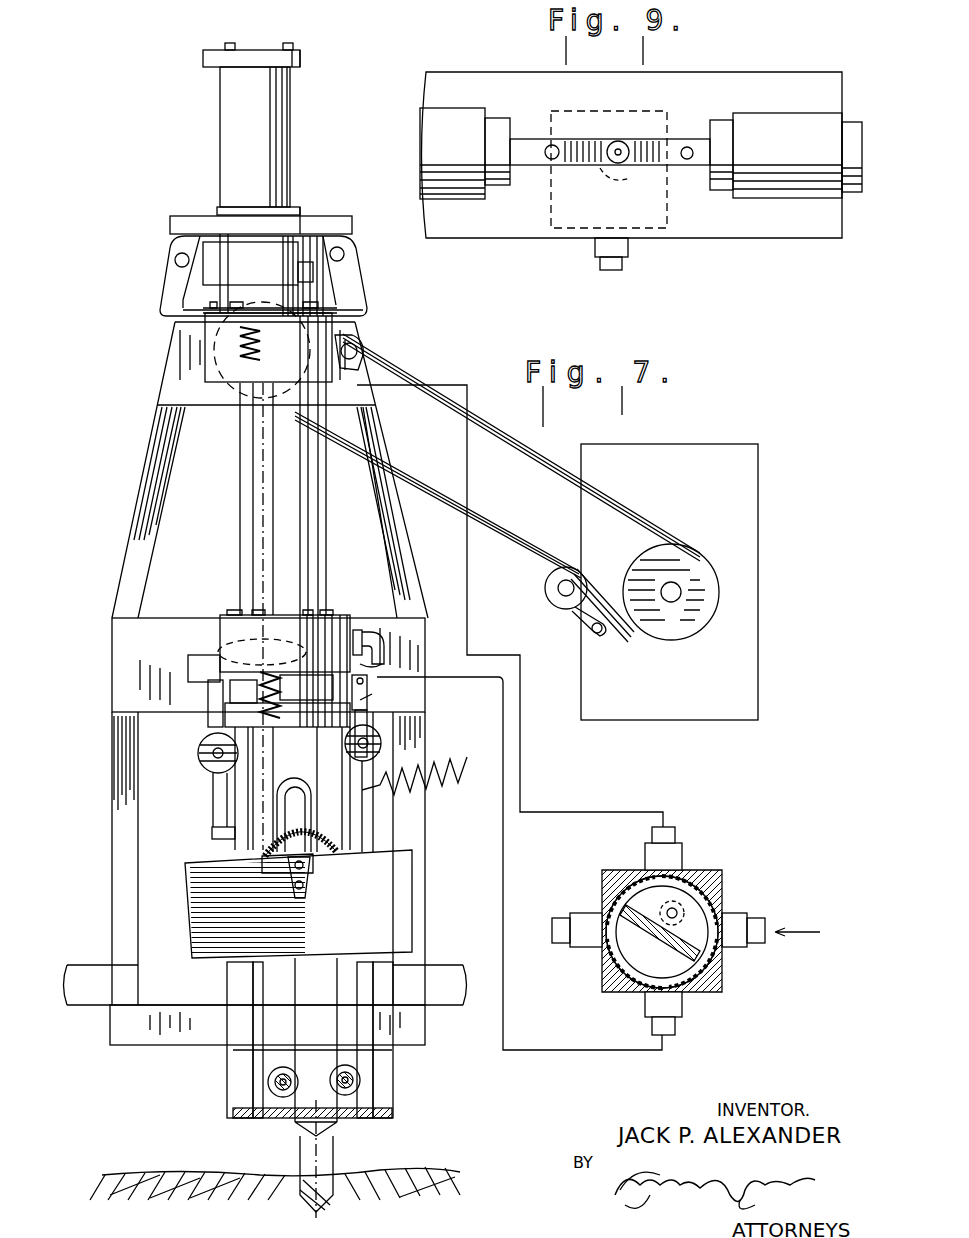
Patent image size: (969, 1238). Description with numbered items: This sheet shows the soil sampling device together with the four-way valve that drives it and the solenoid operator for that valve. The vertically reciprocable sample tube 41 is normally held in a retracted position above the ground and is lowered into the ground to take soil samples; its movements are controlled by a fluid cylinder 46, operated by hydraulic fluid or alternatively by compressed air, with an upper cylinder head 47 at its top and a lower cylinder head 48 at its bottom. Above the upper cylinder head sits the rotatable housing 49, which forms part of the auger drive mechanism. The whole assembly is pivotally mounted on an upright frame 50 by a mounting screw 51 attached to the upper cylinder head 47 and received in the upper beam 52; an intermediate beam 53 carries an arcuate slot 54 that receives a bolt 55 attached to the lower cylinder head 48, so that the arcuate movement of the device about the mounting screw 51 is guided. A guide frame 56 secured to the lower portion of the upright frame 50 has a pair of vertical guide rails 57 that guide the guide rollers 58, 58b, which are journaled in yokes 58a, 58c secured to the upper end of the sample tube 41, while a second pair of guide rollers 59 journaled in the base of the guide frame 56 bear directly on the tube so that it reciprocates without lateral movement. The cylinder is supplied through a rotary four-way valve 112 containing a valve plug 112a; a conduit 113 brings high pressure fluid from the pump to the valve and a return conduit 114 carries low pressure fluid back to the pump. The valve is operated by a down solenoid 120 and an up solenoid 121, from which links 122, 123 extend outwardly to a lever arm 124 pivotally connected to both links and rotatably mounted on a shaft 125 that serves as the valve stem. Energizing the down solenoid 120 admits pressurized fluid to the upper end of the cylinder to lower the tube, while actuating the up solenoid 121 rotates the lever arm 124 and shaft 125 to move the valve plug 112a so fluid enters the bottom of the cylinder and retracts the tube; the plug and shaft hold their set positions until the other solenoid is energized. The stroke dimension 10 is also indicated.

In FIG. 7, the hydraulic cylinder / stroke dimension 10 is at (247, 20).
In FIG. 7, the sample tube 41 is at (322, 975).
In FIG. 7, the fluid cylinder 46 is at (318, 531).
In FIG. 7, the upper cylinder head 47 is at (212, 355).
In FIG. 7, the lower cylinder head 48 is at (225, 617).
In FIG. 7, the rotatable housing 49 is at (337, 1122).
In FIG. 7, the upright frame 50 is at (137, 545).
In FIG. 7, the mounting screw 51 is at (264, 350).
In FIG. 7, the upper beam 52 is at (178, 393).
In FIG. 7, the beam 53 is at (125, 630).
In FIG. 7, the arcuate slot 54 is at (208, 640).
In FIG. 7, the bolt 55 is at (322, 608).
In FIG. 7, the guide frame 56 is at (235, 1088).
In FIG. 7, the vertical guide rails 57 is at (253, 977).
In FIG. 7, the guide roller 58 is at (205, 757).
In FIG. 7, the yoke 58a is at (207, 722).
In FIG. 7, the guide roller 58b is at (385, 741).
In FIG. 7, the yoke 58c is at (367, 716).
In FIG. 7, the guide rollers 59 is at (283, 1094).
In FIG. 7, the rotary four-way valve 112 is at (723, 885).
In FIG. 7, the valve plug 112a is at (628, 915).
In FIG. 7, the conduit 113 is at (745, 913).
In FIG. 7, the return conduit 114 is at (562, 940).
In FIG. 9, the down solenoid 120 is at (420, 167).
In FIG. 9, the up solenoid 121 is at (787, 122).
In FIG. 9, the link 122 is at (533, 160).
In FIG. 9, the link 123 is at (703, 163).
In FIG. 9, the lever arm 124 is at (580, 162).
In FIG. 9, the shaft 125 is at (620, 170).